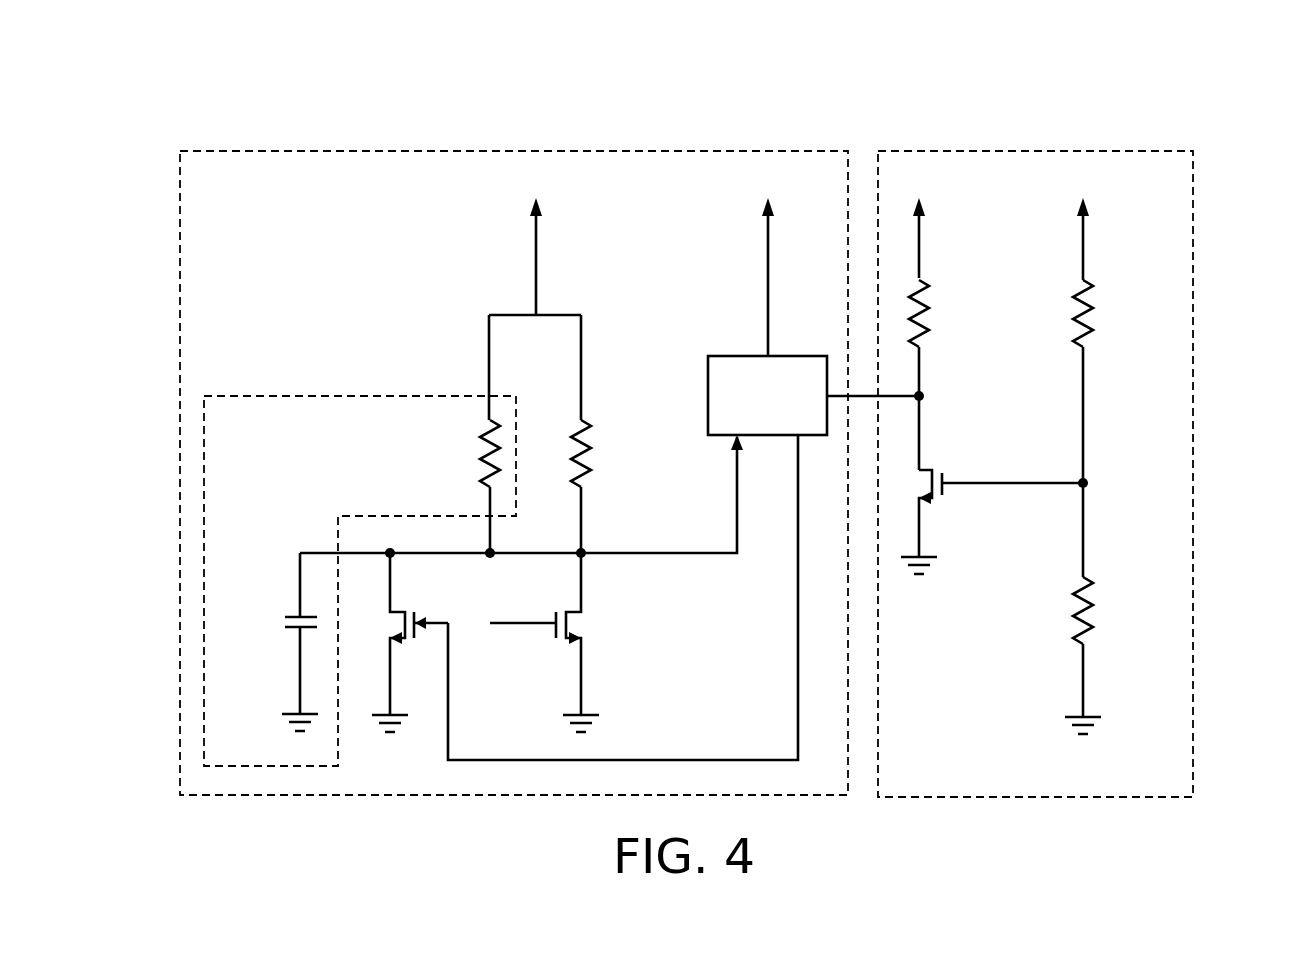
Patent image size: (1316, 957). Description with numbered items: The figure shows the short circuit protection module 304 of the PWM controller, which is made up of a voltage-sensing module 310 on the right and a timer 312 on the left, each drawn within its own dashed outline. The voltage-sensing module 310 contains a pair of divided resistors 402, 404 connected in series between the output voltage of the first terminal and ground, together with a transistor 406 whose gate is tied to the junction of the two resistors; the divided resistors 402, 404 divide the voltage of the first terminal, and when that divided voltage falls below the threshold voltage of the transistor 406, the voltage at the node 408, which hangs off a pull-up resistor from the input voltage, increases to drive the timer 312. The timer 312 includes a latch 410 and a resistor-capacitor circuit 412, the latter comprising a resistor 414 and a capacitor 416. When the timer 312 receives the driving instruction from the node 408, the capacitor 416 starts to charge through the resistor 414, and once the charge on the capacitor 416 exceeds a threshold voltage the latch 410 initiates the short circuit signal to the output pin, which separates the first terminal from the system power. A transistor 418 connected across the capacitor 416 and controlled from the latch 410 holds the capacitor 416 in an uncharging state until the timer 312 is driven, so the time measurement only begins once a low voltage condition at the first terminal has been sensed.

The short circuit protection module 304 is at (1300, 67).
The voltage-sensing module 310 is at (1035, 150).
The timer 312 is at (516, 150).
The divided resistor 402 is at (1090, 305).
The divided resistor 404 is at (1090, 606).
The transistor 406 is at (925, 469).
The node 408 is at (925, 396).
The latch 410 is at (807, 356).
The resistor-capacitor circuit 412 is at (360, 396).
The resistor 414 is at (490, 453).
The capacitor 416 is at (300, 608).
The transistor 418 is at (403, 612).